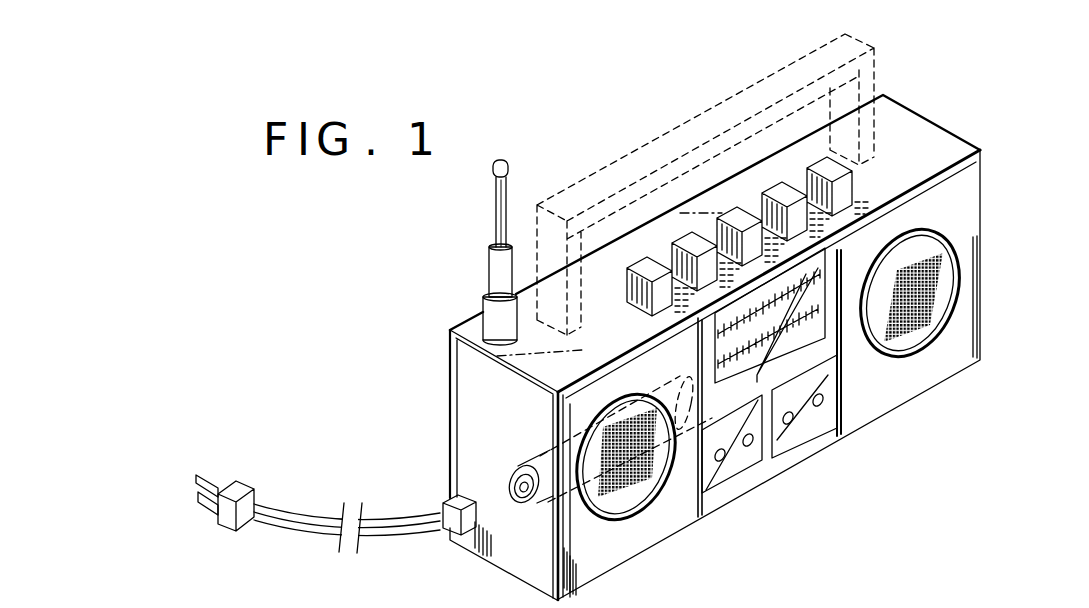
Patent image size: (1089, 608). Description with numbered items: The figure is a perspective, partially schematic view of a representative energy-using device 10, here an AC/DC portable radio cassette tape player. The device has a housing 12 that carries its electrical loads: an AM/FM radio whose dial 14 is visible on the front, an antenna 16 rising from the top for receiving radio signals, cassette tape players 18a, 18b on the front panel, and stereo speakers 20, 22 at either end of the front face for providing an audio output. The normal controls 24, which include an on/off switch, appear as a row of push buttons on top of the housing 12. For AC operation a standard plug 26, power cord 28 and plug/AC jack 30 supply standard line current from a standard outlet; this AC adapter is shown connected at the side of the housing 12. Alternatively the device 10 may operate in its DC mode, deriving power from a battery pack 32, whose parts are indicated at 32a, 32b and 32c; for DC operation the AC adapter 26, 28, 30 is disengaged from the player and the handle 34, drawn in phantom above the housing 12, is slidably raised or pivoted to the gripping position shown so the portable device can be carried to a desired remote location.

The energy-using device 10 is at (958, 92).
The housing 12 is at (983, 195).
The dial 14 is at (826, 259).
The antenna 16 is at (493, 218).
The cassette tape player 18a is at (750, 456).
The cassette tape player 18b is at (818, 420).
The stereo speaker 20 is at (643, 497).
The stereo speaker 22 is at (940, 297).
The normal controls 24 is at (843, 192).
The standard plug 26 is at (240, 490).
The power cord 28 is at (312, 512).
The plug/AC jack 30 is at (462, 538).
The battery pack 32 is at (538, 441).
The knob shaft lower edge 32a is at (570, 470).
The knob shaft upper edge 32b is at (610, 413).
The knob shaft inner end 32c is at (690, 382).
The handle 34 is at (640, 148).